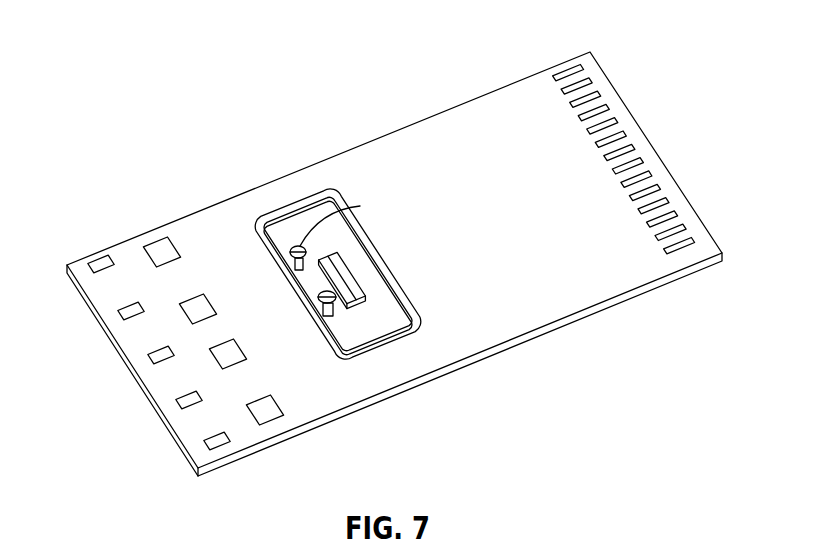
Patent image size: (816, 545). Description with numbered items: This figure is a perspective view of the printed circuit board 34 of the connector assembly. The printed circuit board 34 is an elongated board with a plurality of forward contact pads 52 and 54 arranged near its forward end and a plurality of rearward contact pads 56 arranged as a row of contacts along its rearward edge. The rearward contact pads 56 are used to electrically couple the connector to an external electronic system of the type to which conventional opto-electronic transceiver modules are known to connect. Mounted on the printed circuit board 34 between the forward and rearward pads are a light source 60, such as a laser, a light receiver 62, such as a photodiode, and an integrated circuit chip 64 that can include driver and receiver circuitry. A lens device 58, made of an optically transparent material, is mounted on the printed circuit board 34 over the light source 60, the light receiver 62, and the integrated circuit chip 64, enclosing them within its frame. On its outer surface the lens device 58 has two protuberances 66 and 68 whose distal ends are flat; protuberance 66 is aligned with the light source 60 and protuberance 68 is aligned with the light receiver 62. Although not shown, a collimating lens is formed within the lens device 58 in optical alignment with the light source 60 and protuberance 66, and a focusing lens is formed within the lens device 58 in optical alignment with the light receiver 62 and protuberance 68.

The printed circuit board 34 is at (420, 121).
The forward contact pads 52 is at (155, 243).
The forward contact pads 54 is at (97, 261).
The rearward contact pads 56 is at (566, 63).
The lens device 58 is at (308, 203).
The light source 60 is at (293, 267).
The light receiver 62 is at (323, 310).
The integrated circuit chip 64 is at (350, 288).
The protuberance 66 is at (360, 206).
The protuberance 68 is at (330, 280).